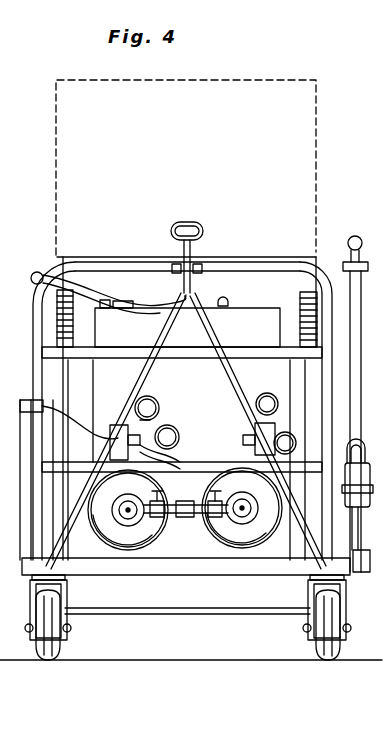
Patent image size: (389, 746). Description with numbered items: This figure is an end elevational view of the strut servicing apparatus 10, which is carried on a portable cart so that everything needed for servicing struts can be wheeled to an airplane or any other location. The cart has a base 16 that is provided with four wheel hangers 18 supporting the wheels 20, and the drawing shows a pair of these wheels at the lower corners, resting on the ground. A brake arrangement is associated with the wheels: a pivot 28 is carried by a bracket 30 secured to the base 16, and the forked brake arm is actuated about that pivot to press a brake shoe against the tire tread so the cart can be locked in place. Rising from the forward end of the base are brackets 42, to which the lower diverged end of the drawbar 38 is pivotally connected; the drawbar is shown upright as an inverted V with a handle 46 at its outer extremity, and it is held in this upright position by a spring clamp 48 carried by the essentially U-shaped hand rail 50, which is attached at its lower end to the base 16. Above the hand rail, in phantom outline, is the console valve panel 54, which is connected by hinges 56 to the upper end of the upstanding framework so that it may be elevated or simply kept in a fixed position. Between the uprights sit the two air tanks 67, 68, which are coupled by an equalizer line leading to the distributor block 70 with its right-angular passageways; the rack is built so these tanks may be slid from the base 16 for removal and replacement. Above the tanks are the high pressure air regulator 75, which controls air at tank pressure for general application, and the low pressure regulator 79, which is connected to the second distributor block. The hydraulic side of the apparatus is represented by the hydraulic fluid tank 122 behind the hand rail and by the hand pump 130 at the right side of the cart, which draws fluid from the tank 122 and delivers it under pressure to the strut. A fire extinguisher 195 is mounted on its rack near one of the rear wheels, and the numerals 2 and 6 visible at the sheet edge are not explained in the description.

The frame 2 is at (63, 380).
The cart 6 is at (4, 204).
The strut servicing apparatus 10 is at (7, 404).
The base 16 is at (192, 575).
The wheel hangers 18 is at (67, 592).
The wheels 20 is at (60, 655).
The pivot 28 is at (28, 245).
The bracket 30 is at (52, 570).
The drawbar 38 is at (200, 323).
The brackets 42 is at (32, 577).
The handle 46 is at (185, 222).
The spring clamp 48 is at (202, 270).
The hand rail 50 is at (283, 261).
The console valve panel 54 is at (300, 166).
The hinges 56 is at (75, 295).
The tank 67 is at (245, 548).
The tank 68 is at (133, 546).
The distributor block 70 is at (195, 498).
The high pressure air regulator 75 is at (138, 430).
The low pressure regulator 79 is at (258, 432).
The tank 122 is at (140, 322).
The hand pump 130 is at (357, 353).
The fire extinguisher 195 is at (320, 556).